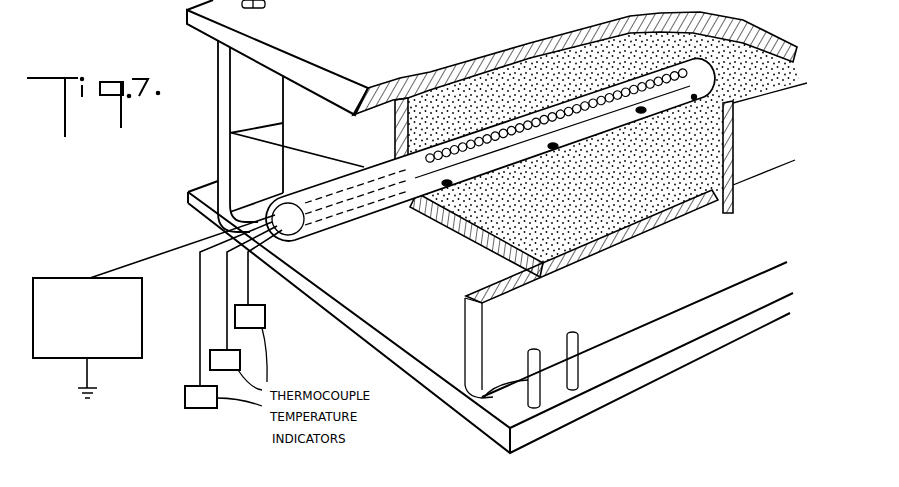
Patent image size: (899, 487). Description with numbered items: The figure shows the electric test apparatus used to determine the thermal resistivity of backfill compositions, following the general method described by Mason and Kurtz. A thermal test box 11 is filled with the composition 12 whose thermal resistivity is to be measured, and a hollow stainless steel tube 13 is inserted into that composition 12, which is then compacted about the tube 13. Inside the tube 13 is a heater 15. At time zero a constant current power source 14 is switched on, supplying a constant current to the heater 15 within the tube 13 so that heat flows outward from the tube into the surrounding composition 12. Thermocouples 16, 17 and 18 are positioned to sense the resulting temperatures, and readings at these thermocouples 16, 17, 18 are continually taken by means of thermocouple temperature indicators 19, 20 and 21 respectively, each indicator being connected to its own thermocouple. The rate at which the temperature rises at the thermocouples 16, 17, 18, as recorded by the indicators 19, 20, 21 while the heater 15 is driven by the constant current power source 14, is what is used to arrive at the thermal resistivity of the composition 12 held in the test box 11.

The thermal test box 11 is at (696, 376).
The composition 12 is at (663, 190).
The hollow stainless steel tube 13 is at (577, 101).
The constant current power source 14 is at (154, 306).
The heater 15 is at (511, 131).
The thermocouple 16 is at (452, 184).
The thermocouple 17 is at (563, 148).
The thermocouple 18 is at (645, 108).
The thermocouple temperature indicator 19 is at (185, 396).
The thermocouple temperature indicator 20 is at (212, 350).
The thermocouple temperature indicator 21 is at (268, 321).